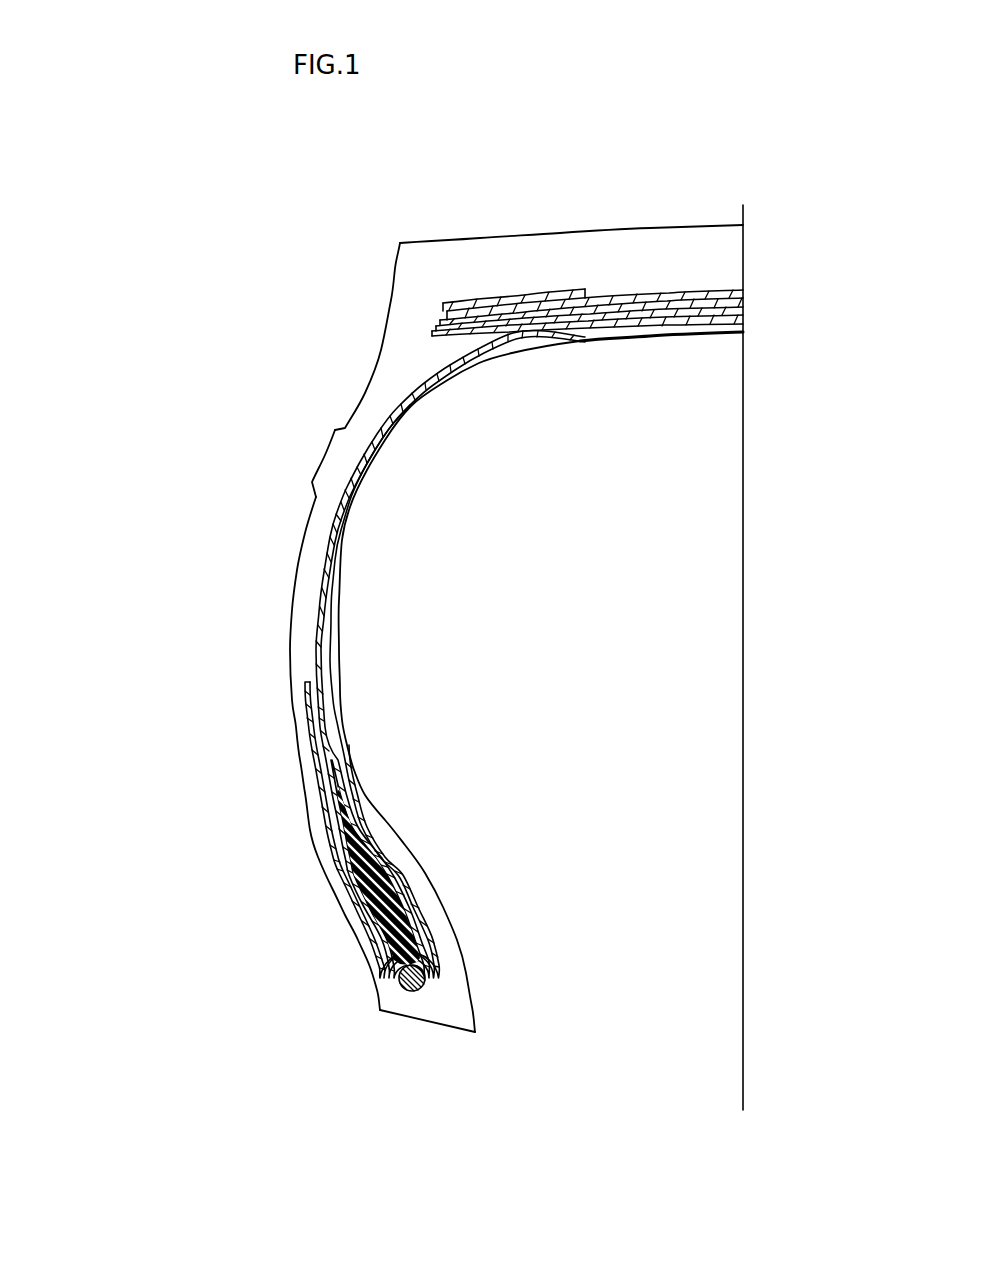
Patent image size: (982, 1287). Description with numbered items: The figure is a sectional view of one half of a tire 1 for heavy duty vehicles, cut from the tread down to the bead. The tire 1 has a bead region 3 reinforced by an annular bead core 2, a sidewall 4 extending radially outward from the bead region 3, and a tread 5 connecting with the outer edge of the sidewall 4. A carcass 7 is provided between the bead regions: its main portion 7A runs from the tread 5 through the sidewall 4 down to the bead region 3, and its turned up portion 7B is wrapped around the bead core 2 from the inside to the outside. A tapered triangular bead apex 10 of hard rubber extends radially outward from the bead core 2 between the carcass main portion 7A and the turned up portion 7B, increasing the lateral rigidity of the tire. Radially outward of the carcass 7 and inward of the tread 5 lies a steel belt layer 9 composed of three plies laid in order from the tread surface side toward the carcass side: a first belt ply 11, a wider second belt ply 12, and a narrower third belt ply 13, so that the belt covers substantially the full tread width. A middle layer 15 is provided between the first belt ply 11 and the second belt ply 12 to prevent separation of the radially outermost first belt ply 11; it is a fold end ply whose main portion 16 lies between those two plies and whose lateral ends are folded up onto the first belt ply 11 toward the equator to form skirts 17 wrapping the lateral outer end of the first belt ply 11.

The tire 1 is at (146, 310).
The bead core 2 is at (417, 998).
The bead region 3 is at (509, 995).
The sidewall 4 is at (255, 683).
The tread 5 is at (643, 185).
The carcass 7 is at (352, 482).
The carcass main portion 7A is at (342, 548).
The turned up portion 7B is at (305, 726).
The steel belt layer 9 is at (662, 294).
The bead apex 10 is at (375, 852).
The first belt ply 11 is at (746, 290).
The second belt ply 12 is at (746, 314).
The third belt ply 13 is at (746, 313).
The middle layer 15 is at (593, 198).
The main portion of the middle layer 16 is at (591, 293).
The skirt 17 is at (499, 295).